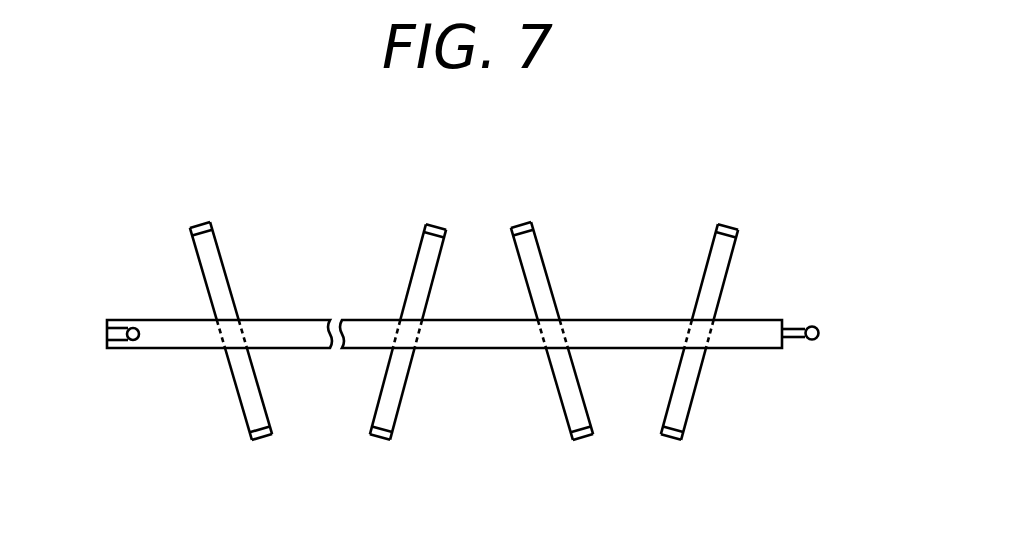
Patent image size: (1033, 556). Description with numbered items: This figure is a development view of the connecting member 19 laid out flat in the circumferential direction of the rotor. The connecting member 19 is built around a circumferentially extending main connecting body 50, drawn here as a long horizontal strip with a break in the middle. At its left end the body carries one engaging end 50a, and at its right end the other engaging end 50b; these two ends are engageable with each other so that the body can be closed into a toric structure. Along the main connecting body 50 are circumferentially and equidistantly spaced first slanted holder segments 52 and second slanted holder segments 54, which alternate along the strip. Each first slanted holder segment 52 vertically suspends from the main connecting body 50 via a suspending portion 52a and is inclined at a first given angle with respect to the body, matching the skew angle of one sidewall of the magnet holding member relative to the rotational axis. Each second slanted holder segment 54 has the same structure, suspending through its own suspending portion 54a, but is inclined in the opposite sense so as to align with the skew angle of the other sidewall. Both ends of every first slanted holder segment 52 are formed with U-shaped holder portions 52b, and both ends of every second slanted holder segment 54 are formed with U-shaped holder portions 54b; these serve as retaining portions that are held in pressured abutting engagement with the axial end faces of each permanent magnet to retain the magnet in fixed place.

The connecting member 19 is at (590, 230).
The main connecting body 50 is at (465, 333).
The one engaging end 50a is at (117, 350).
The other engaging end 50b is at (812, 341).
The first slanted holder segment 52 is at (207, 268).
The suspending portion 52a is at (222, 328).
The U-shaped holder portion 52b is at (200, 225).
The second slanted holder segment 54 is at (408, 290).
The suspending portion 54a is at (397, 332).
The U-shaped holder portion 54b is at (432, 225).